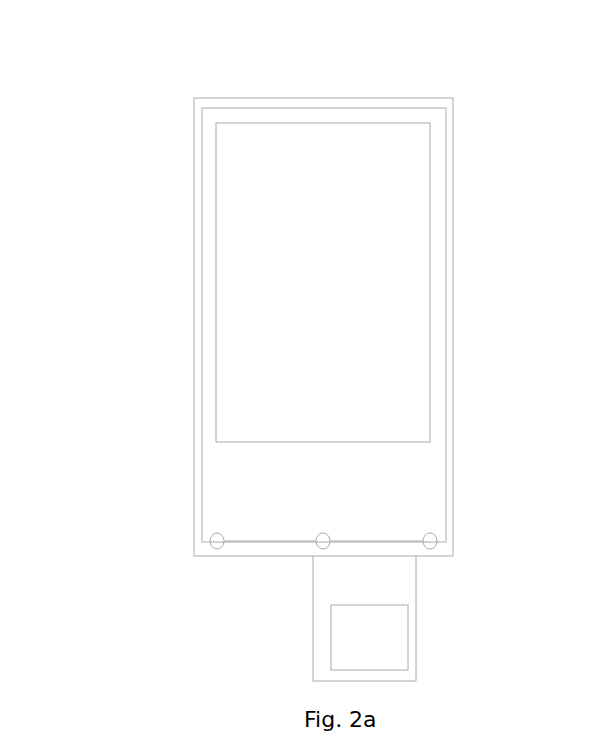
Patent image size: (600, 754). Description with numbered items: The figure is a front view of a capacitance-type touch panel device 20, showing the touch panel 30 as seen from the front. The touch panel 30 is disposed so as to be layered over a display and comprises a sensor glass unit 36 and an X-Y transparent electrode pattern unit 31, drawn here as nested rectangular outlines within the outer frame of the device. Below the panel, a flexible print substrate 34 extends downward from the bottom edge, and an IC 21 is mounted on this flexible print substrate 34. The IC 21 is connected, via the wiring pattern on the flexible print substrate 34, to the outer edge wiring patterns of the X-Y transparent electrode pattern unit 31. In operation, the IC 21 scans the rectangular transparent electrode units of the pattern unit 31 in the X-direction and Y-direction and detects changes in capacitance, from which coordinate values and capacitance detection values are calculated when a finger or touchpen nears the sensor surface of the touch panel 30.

The touch panel device 20 is at (132, 86).
The X-Y transparent electrode pattern unit 31 is at (202, 322).
The sensor glass unit 36 is at (453, 208).
The touch panel 30 is at (462, 388).
The flexible print substrate 34 is at (322, 643).
The IC 21 is at (392, 637).